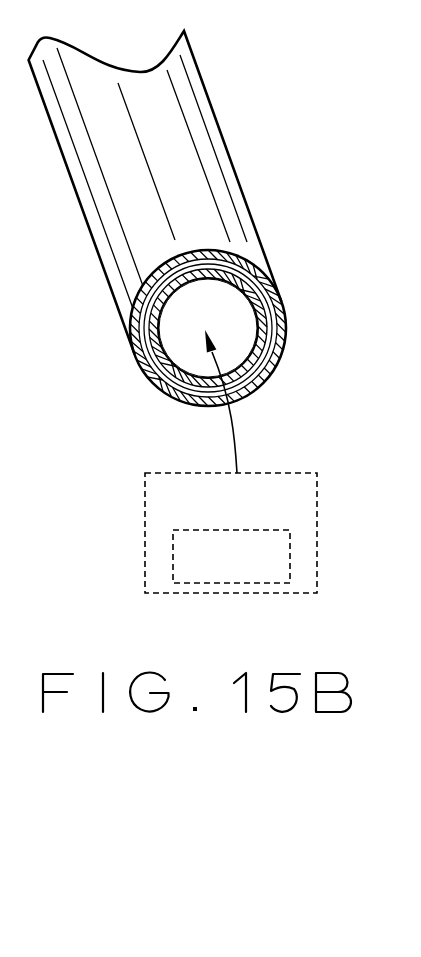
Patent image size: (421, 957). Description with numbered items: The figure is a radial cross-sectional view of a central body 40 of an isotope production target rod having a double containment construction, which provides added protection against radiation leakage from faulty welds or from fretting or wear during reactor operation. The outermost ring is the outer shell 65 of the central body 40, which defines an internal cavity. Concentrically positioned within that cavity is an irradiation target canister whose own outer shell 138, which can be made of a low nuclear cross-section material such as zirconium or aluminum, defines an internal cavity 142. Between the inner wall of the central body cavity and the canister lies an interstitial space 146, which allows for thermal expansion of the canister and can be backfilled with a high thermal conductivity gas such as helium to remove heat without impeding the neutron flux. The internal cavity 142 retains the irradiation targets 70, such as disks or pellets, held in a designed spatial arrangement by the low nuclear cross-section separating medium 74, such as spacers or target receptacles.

The central body 40 is at (222, 87).
The outer shell 65 is at (282, 312).
The interstitial space 146 is at (280, 353).
The outer shell 138 is at (148, 377).
The internal cavity 142 is at (173, 313).
The separating medium 74 is at (158, 545).
The irradiation targets 70 is at (185, 572).